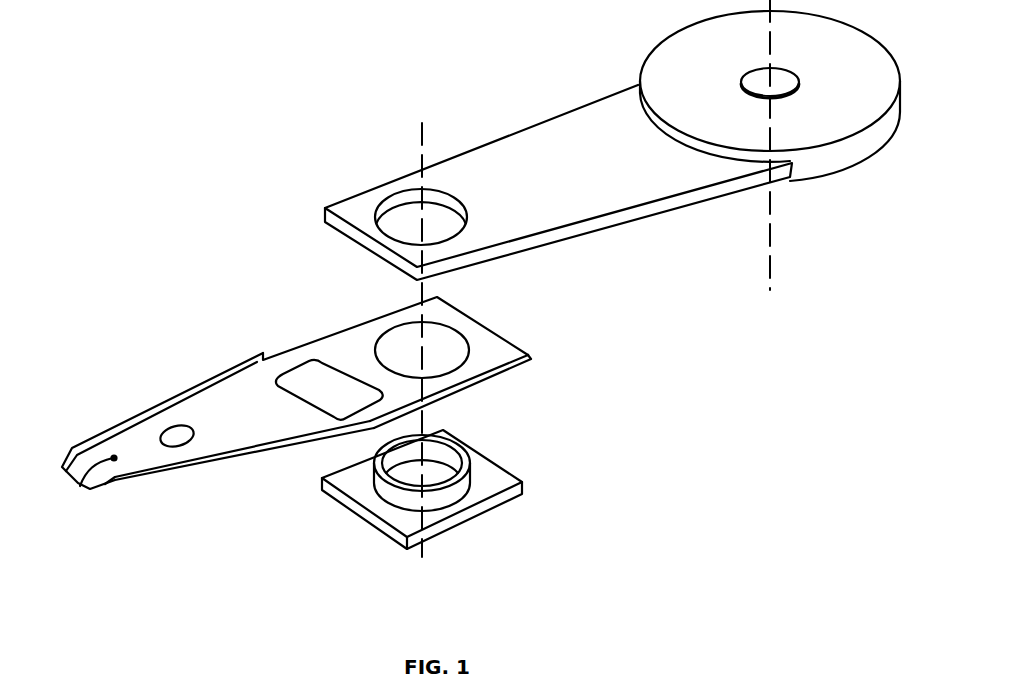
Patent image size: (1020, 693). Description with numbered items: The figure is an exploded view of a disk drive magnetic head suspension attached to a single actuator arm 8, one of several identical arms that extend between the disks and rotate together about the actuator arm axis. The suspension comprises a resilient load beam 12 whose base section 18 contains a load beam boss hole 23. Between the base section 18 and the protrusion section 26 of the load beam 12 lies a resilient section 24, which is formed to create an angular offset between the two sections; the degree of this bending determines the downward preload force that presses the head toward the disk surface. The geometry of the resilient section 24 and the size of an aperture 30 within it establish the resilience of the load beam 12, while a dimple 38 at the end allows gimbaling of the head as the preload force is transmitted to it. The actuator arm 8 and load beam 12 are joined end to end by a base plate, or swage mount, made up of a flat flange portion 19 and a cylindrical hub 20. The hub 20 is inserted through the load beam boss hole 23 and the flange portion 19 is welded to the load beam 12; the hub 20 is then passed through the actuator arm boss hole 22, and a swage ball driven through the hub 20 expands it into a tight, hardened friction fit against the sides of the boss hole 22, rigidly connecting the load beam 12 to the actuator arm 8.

The actuator arm 8 is at (533, 135).
The load beam 12 is at (299, 401).
The base section 18 is at (467, 377).
The flange portion 19 is at (497, 478).
The hub 20 is at (448, 497).
The actuator arm boss hole 22 is at (392, 204).
The load beam boss hole 23 is at (395, 324).
The resilient section 24 is at (288, 363).
The protrusion section 26 is at (198, 452).
The aperture 30 is at (317, 357).
The dimple 38 is at (80, 478).